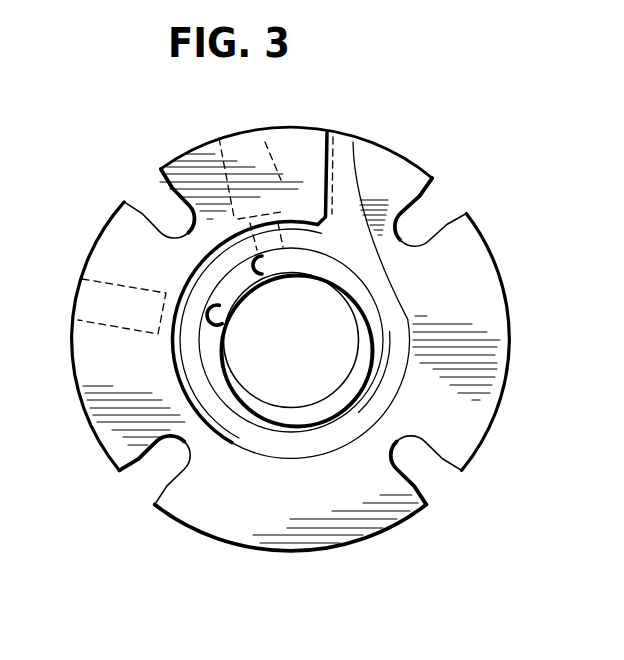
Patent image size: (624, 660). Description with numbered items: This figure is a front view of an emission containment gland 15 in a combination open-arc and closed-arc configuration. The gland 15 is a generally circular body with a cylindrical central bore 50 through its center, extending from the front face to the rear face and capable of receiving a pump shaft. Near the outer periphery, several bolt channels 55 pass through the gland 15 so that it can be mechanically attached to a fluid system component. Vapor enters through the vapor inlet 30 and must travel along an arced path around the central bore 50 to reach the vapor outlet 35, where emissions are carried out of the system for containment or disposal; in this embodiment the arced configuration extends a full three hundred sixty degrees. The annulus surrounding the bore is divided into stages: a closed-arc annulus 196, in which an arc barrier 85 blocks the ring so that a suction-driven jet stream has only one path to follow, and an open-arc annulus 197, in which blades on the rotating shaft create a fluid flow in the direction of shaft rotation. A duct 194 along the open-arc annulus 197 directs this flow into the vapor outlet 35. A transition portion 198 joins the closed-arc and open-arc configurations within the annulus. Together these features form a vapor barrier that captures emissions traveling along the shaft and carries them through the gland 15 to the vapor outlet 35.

The emission containment gland 15 is at (326, 557).
The vapor inlet 30 is at (97, 301).
The vapor outlet 35 is at (281, 211).
The central bore 50 is at (304, 362).
The bolt channels 55 is at (170, 188).
The arc barrier 85 is at (227, 292).
The duct 194 is at (350, 185).
The closed-arc annulus 196 is at (290, 421).
The open-arc annulus 197 is at (370, 410).
The transition portion 198 is at (258, 430).